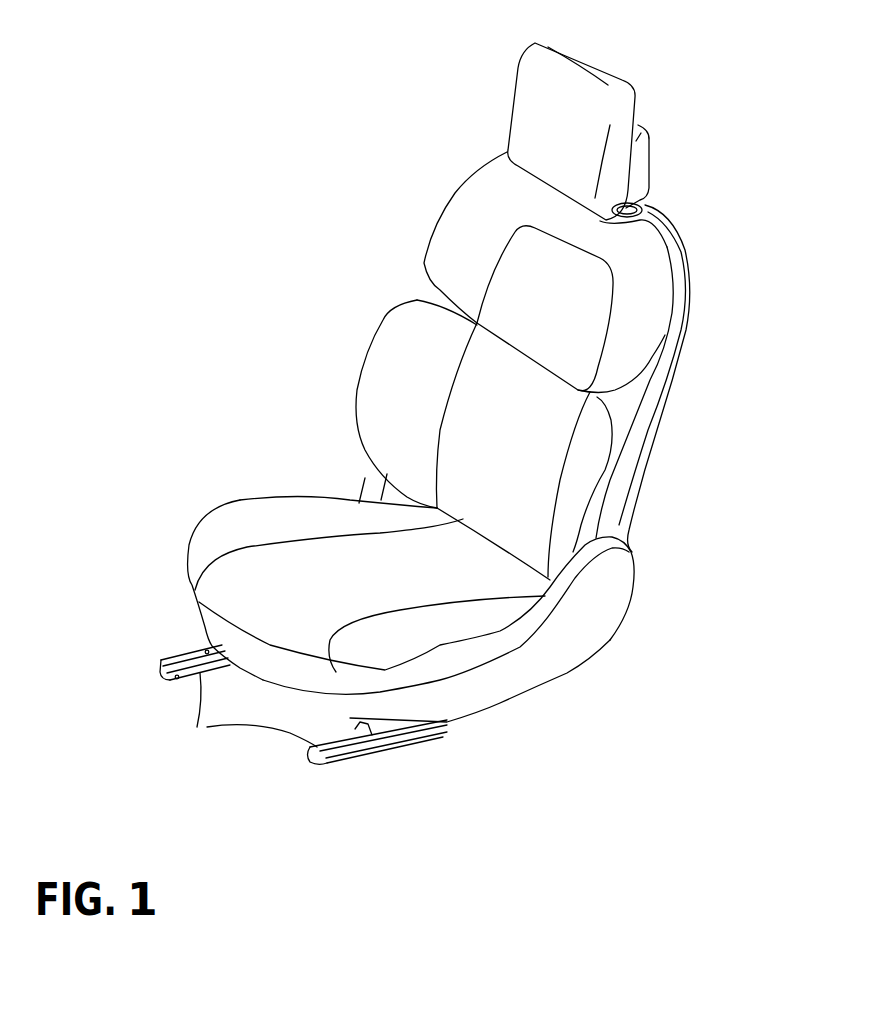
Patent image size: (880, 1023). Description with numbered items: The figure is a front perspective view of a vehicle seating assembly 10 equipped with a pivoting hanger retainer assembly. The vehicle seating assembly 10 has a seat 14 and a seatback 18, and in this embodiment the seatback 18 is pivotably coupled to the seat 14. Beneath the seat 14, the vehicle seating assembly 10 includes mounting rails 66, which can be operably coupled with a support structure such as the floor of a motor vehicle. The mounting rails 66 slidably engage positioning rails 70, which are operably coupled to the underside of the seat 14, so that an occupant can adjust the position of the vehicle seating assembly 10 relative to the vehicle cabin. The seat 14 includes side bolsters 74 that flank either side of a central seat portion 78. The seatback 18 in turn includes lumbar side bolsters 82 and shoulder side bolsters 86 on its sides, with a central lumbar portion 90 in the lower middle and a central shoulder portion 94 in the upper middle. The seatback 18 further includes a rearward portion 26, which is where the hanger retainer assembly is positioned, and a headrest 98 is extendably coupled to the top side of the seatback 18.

The vehicle seating assembly 10 is at (228, 231).
The seat 14 is at (519, 700).
The seatback 18 is at (682, 222).
The rearward portion 26 is at (657, 413).
The mounting rails 66 is at (197, 727).
The positioning rails 70 is at (205, 648).
The side bolsters 74 is at (243, 508).
The central seat portion 78 is at (376, 590).
The lumbar side bolsters 82 is at (377, 357).
The shoulder side bolsters 86 is at (462, 213).
The central lumbar portion 90 is at (511, 452).
The central shoulder portion 94 is at (553, 319).
The headrest 98 is at (537, 107).